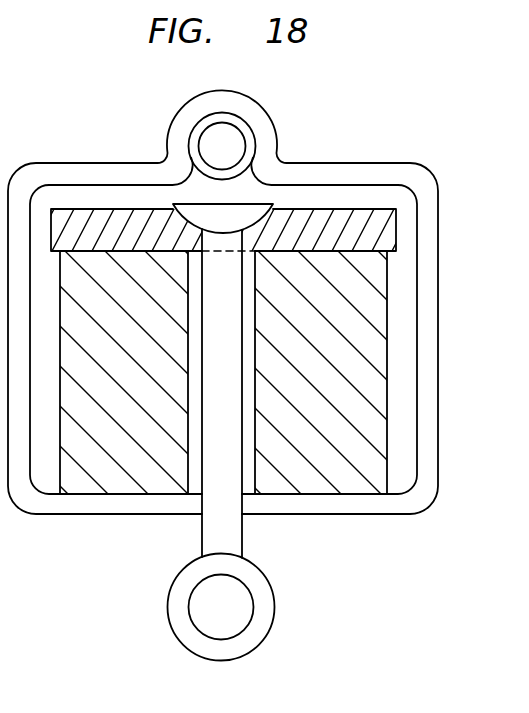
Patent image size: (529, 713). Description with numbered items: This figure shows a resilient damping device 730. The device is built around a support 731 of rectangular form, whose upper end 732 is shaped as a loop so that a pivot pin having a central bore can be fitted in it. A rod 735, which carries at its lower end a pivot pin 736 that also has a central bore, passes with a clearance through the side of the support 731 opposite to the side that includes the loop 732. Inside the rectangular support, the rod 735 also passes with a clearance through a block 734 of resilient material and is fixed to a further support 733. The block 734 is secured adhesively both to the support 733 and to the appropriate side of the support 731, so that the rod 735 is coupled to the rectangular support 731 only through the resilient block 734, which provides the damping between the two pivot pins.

The resilient damping device 730 is at (294, 154).
The support 731 is at (73, 506).
The upper end in the form of a loop 732 is at (168, 138).
The support 733 is at (385, 230).
The block of resilient material 734 is at (285, 483).
The rod 735 is at (200, 538).
The pivot pin 736 is at (201, 643).